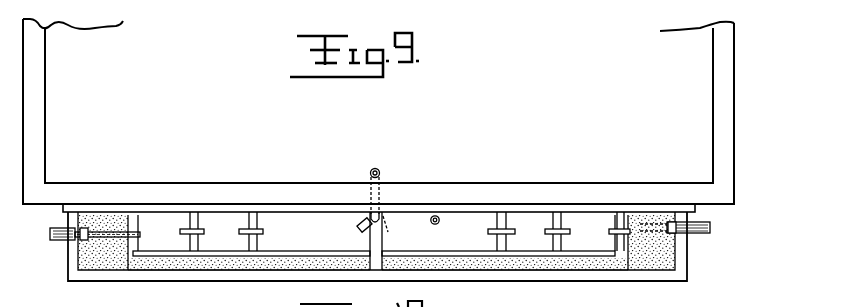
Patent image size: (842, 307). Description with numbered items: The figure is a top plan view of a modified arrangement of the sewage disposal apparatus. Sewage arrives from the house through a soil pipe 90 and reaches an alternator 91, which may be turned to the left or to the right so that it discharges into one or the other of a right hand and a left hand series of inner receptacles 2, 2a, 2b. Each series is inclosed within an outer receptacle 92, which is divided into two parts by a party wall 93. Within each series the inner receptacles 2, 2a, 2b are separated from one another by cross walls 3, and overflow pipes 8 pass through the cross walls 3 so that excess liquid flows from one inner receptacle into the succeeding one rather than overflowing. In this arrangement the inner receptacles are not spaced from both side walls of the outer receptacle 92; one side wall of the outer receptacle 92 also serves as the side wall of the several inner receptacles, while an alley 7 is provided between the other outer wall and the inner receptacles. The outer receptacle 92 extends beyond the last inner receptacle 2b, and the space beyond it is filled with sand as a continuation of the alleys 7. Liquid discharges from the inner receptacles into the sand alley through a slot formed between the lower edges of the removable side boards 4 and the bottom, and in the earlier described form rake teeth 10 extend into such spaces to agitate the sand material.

The inner receptacle 2 is at (440, 215).
The inner receptacle 2a is at (520, 212).
The inner receptacle 2b is at (150, 218).
The cross wall 3 is at (200, 220).
The side board 4 is at (147, 256).
The alley 7 is at (112, 267).
The overflow pipe 8 is at (182, 229).
The teeth 10 is at (551, 230).
The soil pipe 90 is at (379, 172).
The alternator 91 is at (367, 218).
The outer receptacle 92 is at (510, 260).
The party wall 93 is at (388, 232).